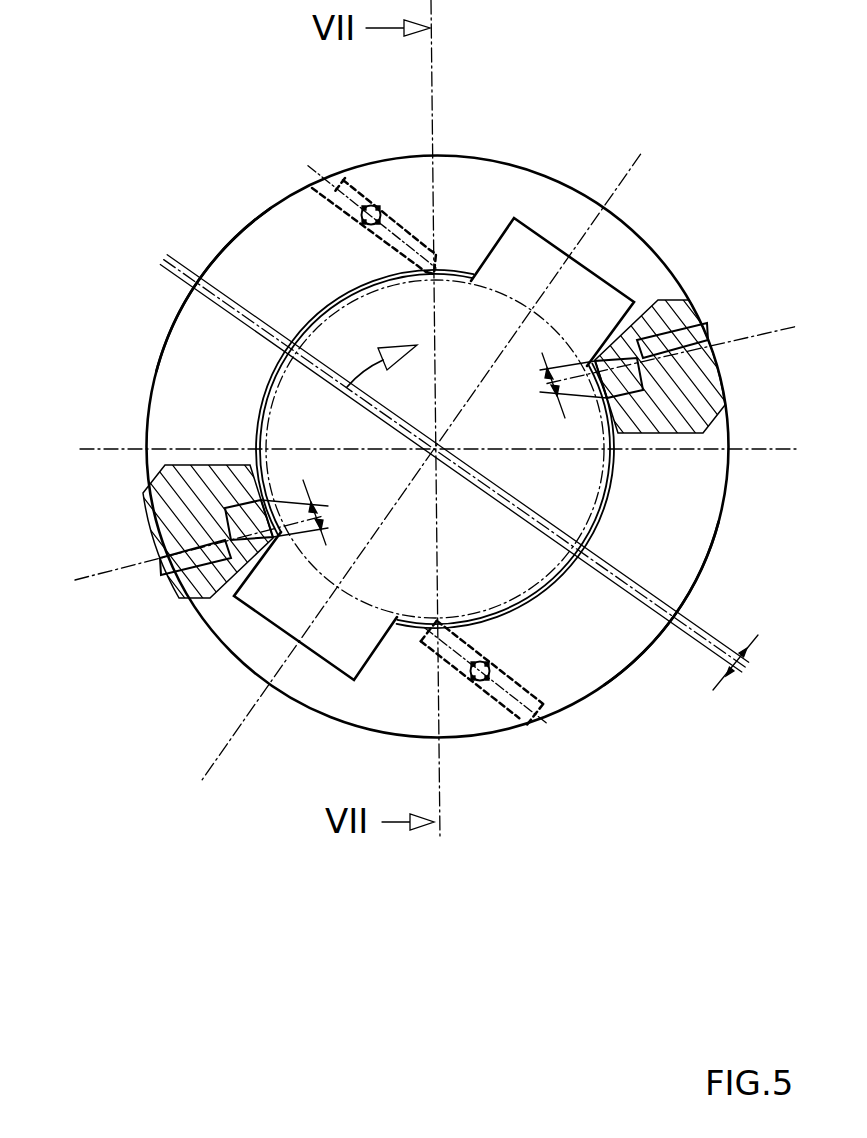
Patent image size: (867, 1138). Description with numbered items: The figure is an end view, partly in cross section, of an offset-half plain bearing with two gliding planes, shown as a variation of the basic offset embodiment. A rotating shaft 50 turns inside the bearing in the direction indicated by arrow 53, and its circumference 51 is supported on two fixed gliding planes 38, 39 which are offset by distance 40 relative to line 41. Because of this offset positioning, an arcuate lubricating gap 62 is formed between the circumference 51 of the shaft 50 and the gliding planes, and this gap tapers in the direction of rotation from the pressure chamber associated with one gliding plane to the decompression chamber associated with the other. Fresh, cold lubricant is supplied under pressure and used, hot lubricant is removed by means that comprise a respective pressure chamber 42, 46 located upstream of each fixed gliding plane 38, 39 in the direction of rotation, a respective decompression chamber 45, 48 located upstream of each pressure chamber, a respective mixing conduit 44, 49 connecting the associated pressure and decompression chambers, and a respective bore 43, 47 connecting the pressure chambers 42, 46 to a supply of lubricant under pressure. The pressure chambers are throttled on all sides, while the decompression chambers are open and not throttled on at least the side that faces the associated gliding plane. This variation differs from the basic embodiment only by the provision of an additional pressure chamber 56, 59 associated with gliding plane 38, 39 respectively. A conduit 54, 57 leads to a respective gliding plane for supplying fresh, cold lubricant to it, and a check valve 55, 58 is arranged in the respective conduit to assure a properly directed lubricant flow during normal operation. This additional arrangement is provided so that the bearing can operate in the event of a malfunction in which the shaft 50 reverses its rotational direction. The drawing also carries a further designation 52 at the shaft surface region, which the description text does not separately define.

The fixed gliding plane 38 is at (280, 262).
The fixed gliding plane 39 is at (598, 635).
The offset distance 40 is at (475, 478).
The line 41 is at (429, 467).
The pressure chamber 42 is at (197, 587).
The bore 43 is at (244, 518).
The mixing conduit 44 is at (318, 512).
The decompression chamber 45 is at (282, 590).
The pressure chamber 46 is at (620, 392).
The bore 47 is at (692, 347).
The decompression chamber 48 is at (585, 298).
The mixing conduit 49 is at (557, 387).
The rotating shaft 50 is at (613, 495).
The circumference of shaft 51 is at (268, 433).
The bore surface 52 is at (615, 462).
The arrow 53 is at (363, 368).
The conduit 54 is at (323, 180).
The check valve 55 is at (373, 205).
The additional pressure chamber 56 is at (433, 255).
The conduit 57 is at (527, 712).
The check valve 58 is at (483, 680).
The additional pressure chamber 59 is at (438, 632).
The arcuate lubricating gap 62 is at (258, 468).